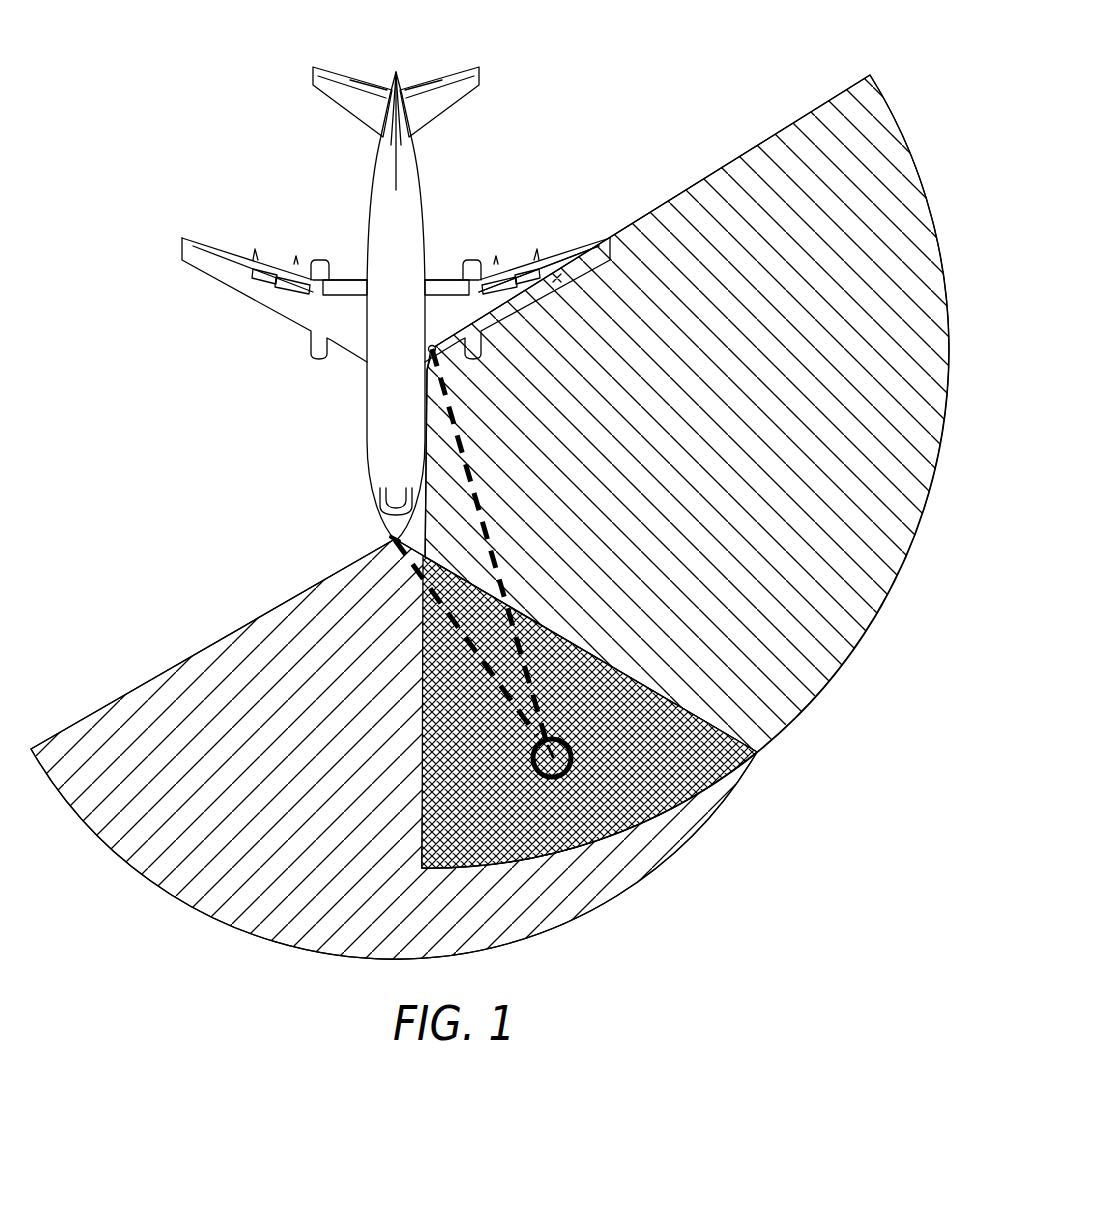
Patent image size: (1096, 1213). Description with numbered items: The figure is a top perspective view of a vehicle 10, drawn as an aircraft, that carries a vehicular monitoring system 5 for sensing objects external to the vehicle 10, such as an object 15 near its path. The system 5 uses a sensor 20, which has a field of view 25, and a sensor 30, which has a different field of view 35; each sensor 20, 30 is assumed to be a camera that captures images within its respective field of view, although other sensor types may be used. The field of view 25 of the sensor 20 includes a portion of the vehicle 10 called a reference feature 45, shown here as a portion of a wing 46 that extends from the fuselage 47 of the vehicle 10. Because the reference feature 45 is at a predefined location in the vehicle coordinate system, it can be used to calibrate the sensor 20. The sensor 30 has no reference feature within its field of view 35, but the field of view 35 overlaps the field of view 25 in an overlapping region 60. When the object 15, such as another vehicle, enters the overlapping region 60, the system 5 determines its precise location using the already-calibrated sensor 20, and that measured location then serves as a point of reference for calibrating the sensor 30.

The vehicular monitoring system 5 is at (490, 517).
The vehicle 10 is at (396, 304).
The object 15 is at (565, 778).
The sensor 20 is at (433, 345).
The field of view 25 is at (797, 121).
The sensor 30 is at (392, 538).
The field of view 35 is at (177, 663).
The reference feature 45 is at (557, 276).
The wing 46 is at (517, 263).
The fuselage 47 is at (367, 187).
The overlapping region 60 is at (689, 766).